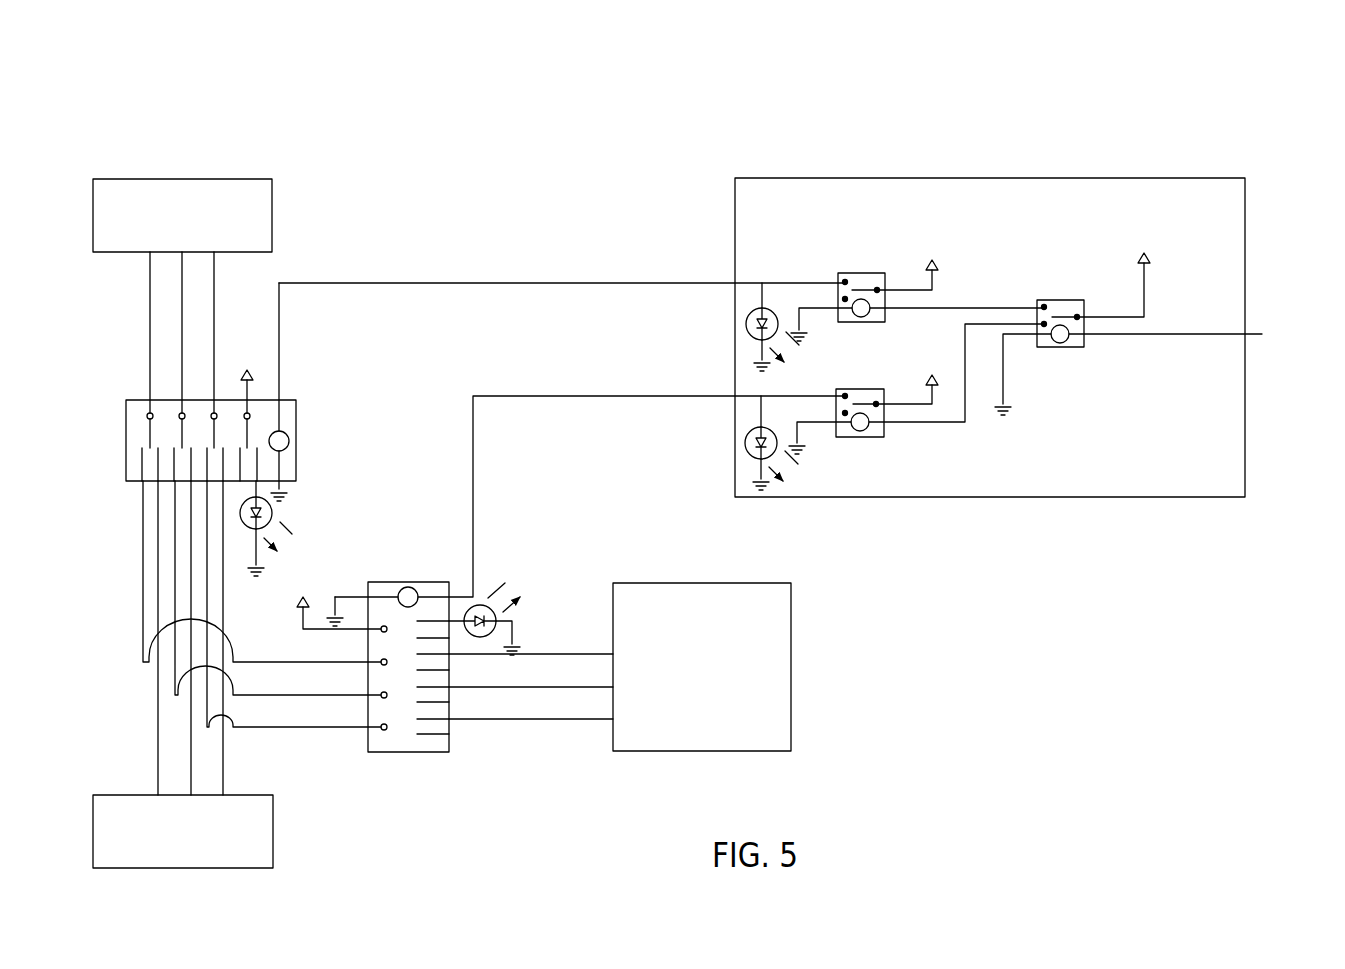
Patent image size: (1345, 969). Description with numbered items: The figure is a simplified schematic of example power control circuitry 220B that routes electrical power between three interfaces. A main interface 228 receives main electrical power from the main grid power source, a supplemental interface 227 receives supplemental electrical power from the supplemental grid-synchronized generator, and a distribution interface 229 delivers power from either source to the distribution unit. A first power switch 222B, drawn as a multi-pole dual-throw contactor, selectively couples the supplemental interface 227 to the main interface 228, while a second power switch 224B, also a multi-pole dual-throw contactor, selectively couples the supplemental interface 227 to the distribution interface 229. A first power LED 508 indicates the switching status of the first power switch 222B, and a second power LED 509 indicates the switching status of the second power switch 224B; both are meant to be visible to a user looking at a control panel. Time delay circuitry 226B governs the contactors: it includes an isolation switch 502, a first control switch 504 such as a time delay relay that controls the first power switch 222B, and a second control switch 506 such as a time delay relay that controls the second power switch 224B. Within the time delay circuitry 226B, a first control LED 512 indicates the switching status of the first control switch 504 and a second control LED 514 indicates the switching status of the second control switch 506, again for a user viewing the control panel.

The power control circuitry 220B is at (452, 88).
The supplemental interface 227 is at (124, 179).
The first power switch 222B is at (134, 400).
The first power LED 508 is at (292, 510).
The second power switch 224B is at (393, 582).
The second power LED 509 is at (510, 585).
The distribution interface 229 is at (643, 583).
The main interface 228 is at (124, 795).
The time delay circuitry 226B is at (767, 178).
The first control LED 512 is at (746, 324).
The second control LED 514 is at (745, 443).
The first control switch 504 is at (880, 273).
The second control switch 506 is at (880, 389).
The isolation switch 502 is at (1080, 300).